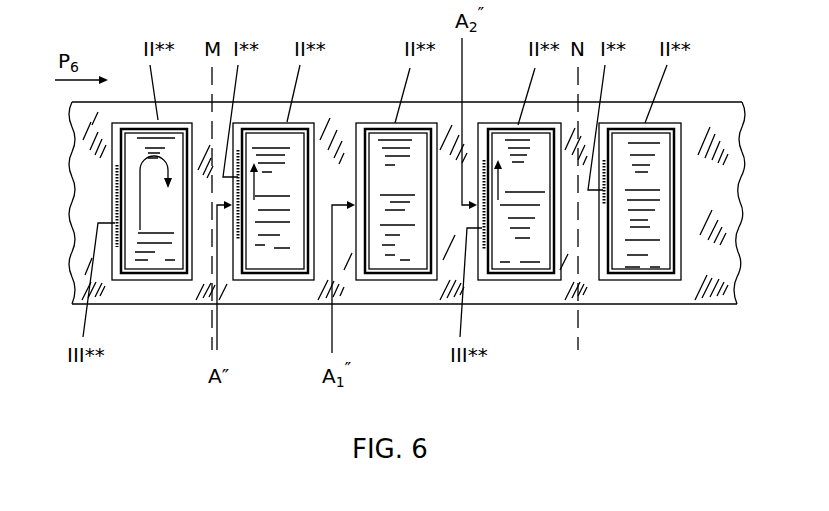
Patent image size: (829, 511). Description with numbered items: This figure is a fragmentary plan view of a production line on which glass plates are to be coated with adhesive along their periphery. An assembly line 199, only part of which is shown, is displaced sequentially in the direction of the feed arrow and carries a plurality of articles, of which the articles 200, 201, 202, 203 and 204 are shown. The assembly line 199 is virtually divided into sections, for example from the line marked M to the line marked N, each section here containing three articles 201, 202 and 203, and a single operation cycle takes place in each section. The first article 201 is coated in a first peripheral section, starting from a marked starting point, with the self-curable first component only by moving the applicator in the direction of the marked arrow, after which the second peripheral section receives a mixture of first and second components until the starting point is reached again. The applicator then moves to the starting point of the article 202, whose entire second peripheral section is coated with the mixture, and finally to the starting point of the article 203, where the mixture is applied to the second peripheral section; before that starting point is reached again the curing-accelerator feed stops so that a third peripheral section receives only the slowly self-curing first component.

The assembly line 199 is at (717, 120).
The article 200 is at (158, 257).
The article 201 is at (273, 260).
The article 202 is at (397, 263).
The article 203 is at (518, 265).
The article 204 is at (642, 260).